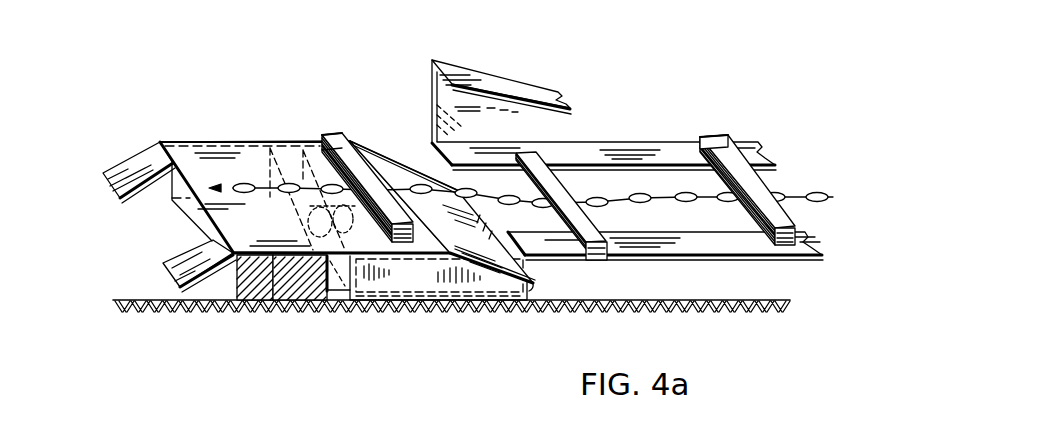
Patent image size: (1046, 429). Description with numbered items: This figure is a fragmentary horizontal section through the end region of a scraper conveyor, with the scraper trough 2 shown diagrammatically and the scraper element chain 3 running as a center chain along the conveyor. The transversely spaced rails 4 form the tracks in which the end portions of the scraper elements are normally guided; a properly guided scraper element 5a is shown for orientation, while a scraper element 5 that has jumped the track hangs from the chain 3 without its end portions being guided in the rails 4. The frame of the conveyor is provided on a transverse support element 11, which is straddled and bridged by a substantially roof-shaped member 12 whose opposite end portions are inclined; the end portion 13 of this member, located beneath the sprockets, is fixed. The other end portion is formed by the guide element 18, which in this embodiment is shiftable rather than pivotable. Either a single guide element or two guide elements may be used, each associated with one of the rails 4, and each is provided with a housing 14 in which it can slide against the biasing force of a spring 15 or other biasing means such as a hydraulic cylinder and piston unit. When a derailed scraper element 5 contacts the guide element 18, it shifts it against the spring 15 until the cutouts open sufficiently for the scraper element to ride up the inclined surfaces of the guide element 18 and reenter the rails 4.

The scraper trough 2 is at (524, 88).
The scraper element chain 3 is at (689, 198).
The rails 4 is at (644, 152).
The scraper element 5 is at (598, 261).
The scraper element 5a is at (328, 133).
The transverse support element 11 is at (305, 282).
The roof-shaped member 12 is at (276, 258).
The end portion 13 is at (137, 166).
The housing 14 is at (408, 282).
The spring 15 is at (305, 225).
The guide element 18 is at (488, 258).